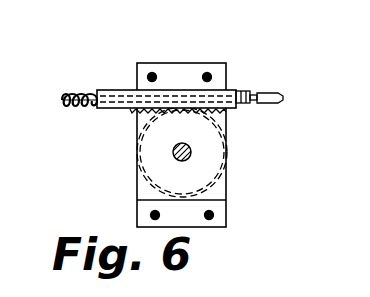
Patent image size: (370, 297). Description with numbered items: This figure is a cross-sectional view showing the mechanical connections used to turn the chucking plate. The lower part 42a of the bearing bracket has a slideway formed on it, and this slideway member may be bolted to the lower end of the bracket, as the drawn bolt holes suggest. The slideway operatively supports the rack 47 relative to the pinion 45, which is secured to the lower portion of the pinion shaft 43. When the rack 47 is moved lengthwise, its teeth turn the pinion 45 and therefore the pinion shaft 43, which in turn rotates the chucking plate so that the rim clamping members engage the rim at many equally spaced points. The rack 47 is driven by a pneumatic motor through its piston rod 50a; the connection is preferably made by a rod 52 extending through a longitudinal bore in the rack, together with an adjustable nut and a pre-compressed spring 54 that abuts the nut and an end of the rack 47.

The lower part of the bearing bracket 42a is at (189, 63).
The pinion shaft 43 is at (191, 151).
The pinion 45 is at (137, 152).
The rack 47 is at (116, 108).
The piston rod 50a is at (268, 104).
The rod 52 is at (62, 98).
The pre-compressed spring 54 is at (72, 96).